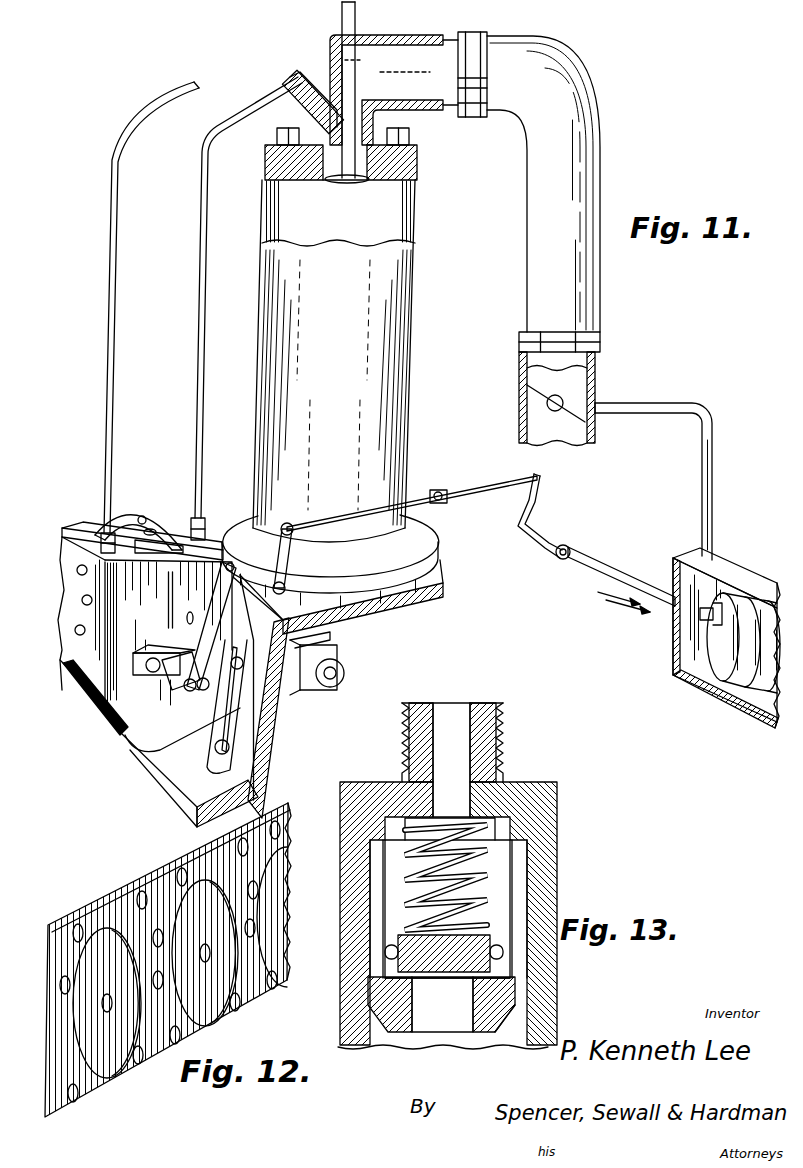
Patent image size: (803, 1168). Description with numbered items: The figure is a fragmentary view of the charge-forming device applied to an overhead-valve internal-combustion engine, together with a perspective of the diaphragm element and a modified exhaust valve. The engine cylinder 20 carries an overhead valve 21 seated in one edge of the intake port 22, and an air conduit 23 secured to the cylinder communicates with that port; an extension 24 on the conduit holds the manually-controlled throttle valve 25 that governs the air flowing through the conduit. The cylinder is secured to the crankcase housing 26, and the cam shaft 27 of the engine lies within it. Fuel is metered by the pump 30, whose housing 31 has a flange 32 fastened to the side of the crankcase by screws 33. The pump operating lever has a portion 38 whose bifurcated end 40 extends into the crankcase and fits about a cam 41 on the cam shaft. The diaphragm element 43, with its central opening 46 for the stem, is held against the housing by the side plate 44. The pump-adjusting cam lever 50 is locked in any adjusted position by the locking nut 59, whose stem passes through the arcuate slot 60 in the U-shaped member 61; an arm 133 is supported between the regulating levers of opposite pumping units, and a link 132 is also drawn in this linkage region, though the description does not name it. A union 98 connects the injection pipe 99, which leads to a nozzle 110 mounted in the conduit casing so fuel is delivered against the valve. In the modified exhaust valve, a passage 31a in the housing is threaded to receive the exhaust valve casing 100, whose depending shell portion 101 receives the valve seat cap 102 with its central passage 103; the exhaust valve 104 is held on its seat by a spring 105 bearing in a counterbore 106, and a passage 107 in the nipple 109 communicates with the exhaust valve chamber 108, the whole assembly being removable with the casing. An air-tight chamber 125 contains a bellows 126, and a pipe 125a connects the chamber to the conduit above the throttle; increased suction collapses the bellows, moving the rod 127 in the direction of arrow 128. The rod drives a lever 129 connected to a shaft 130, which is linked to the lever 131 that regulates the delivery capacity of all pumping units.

In FIG. 11, the engine cylinder 20 is at (418, 212).
In FIG. 11, the valve 21 is at (353, 184).
In FIG. 11, the intake port 22 is at (362, 166).
In FIG. 11, the air conduit 23 is at (408, 60).
In FIG. 11, the extension 24 is at (533, 64).
In FIG. 11, the throttle valve 25 is at (530, 396).
In FIG. 11, the crankcase housing 26 is at (398, 598).
In FIG. 11, the cam shaft 27 is at (293, 646).
In FIG. 11, the pump 30 is at (48, 596).
In FIG. 11, the pump housing 31 is at (130, 720).
In FIG. 13, the pump housing 31 is at (545, 878).
In FIG. 13, the passage 31a is at (508, 1030).
In FIG. 11, the flange 32 is at (243, 712).
In FIG. 11, the screws 33 is at (240, 657).
In FIG. 11, the lever portion 38 is at (262, 706).
In FIG. 11, the bifurcated end 40 is at (300, 688).
In FIG. 11, the cam 41 is at (345, 673).
In FIG. 12, the diaphragm element 43 is at (115, 942).
In FIG. 11, the side plate 44 is at (72, 615).
In FIG. 12, the central opening 46 is at (108, 1010).
In FIG. 11, the pump-adjusting cam lever 50 is at (122, 550).
In FIG. 11, the locking nut 59 is at (148, 520).
In FIG. 11, the arcuate slot 60 is at (120, 527).
In FIG. 11, the U-shaped member 61 is at (98, 517).
In FIG. 11, the union 98 is at (204, 517).
In FIG. 11, the injection pipe 99 is at (205, 466).
In FIG. 13, the exhaust valve casing 100 is at (513, 788).
In FIG. 13, the shell portion 101 is at (540, 846).
In FIG. 13, the valve seat cap 102 is at (390, 1010).
In FIG. 13, the central passage 103 is at (457, 1020).
In FIG. 13, the exhaust valve 104 is at (445, 972).
In FIG. 13, the spring 105 is at (485, 918).
In FIG. 13, the counterbore 106 is at (494, 824).
In FIG. 13, the passage 107 is at (455, 746).
In FIG. 13, the exhaust valve chamber 108 is at (495, 880).
In FIG. 13, the nipple 109 is at (492, 714).
In FIG. 11, the nozzle 110 is at (318, 78).
In FIG. 11, the air-tight chamber 125 is at (735, 575).
In FIG. 11, the pipe 125a is at (712, 422).
In FIG. 11, the bellows 126 is at (748, 600).
In FIG. 11, the rod 127 is at (615, 573).
In FIG. 11, the arrow 128 is at (624, 615).
In FIG. 11, the lever 129 is at (543, 542).
In FIG. 11, the shaft 130 is at (507, 493).
In FIG. 11, the lever 131 is at (212, 582).
In FIG. 11, the link 132 is at (178, 672).
In FIG. 11, the arm 133 is at (175, 606).